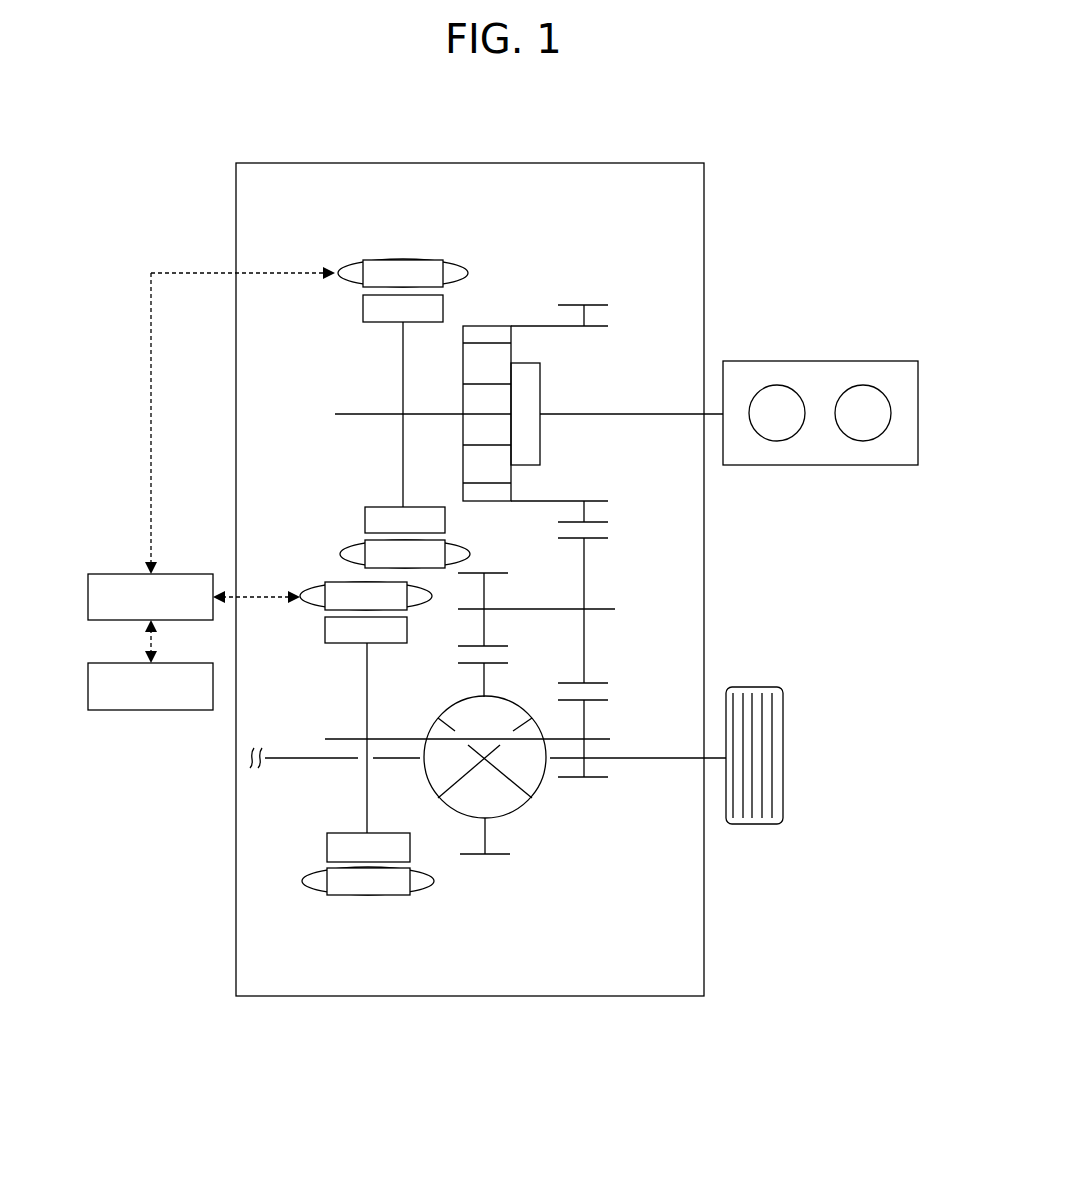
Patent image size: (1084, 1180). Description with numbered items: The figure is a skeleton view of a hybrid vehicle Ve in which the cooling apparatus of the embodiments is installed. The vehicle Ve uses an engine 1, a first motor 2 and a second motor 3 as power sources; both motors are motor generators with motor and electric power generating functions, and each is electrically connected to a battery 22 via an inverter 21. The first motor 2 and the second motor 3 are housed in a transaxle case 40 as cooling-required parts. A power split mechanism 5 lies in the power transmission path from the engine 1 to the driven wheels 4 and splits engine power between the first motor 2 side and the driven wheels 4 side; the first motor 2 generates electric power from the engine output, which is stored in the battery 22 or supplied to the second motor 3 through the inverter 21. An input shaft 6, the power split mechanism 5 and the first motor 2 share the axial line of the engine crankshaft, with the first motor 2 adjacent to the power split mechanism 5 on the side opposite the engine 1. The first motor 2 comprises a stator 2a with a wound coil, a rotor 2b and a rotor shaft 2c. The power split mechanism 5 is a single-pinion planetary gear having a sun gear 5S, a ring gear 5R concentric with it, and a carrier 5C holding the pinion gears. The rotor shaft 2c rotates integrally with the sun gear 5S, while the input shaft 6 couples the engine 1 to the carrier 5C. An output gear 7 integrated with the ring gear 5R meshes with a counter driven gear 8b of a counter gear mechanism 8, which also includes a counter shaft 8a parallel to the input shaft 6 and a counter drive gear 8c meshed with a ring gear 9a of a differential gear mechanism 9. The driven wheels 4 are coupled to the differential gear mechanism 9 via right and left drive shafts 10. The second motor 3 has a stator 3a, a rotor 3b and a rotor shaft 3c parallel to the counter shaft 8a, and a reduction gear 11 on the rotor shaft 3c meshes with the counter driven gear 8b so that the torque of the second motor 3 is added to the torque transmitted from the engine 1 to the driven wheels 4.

The vehicle Ve is at (813, 236).
The transaxle case 40 is at (623, 162).
The engine 1 is at (852, 361).
The first motor 2 is at (387, 373).
The stator 2a is at (380, 258).
The rotor 2b is at (362, 310).
The rotor shaft 2c is at (425, 412).
The second motor 3 is at (438, 781).
The stator 3a is at (380, 896).
The rotor 3b is at (327, 850).
The rotor shaft 3c is at (388, 738).
The driven wheels 4 is at (752, 825).
The power split mechanism 5 is at (511, 359).
The ring gear 5R is at (486, 335).
The carrier 5C is at (542, 380).
The sun gear 5S is at (470, 434).
The input shaft 6 is at (580, 415).
The output gear 7 is at (600, 522).
The counter gear mechanism 8 is at (572, 610).
The counter shaft 8a is at (530, 608).
The counter driven gear 8b is at (593, 539).
The counter drive gear 8c is at (493, 645).
The differential gear mechanism 9 is at (499, 779).
The ring gear 9a is at (495, 665).
The drive shafts 10 is at (291, 760).
The reduction gear 11 is at (600, 700).
The inverter 21 is at (186, 573).
The battery 22 is at (186, 662).